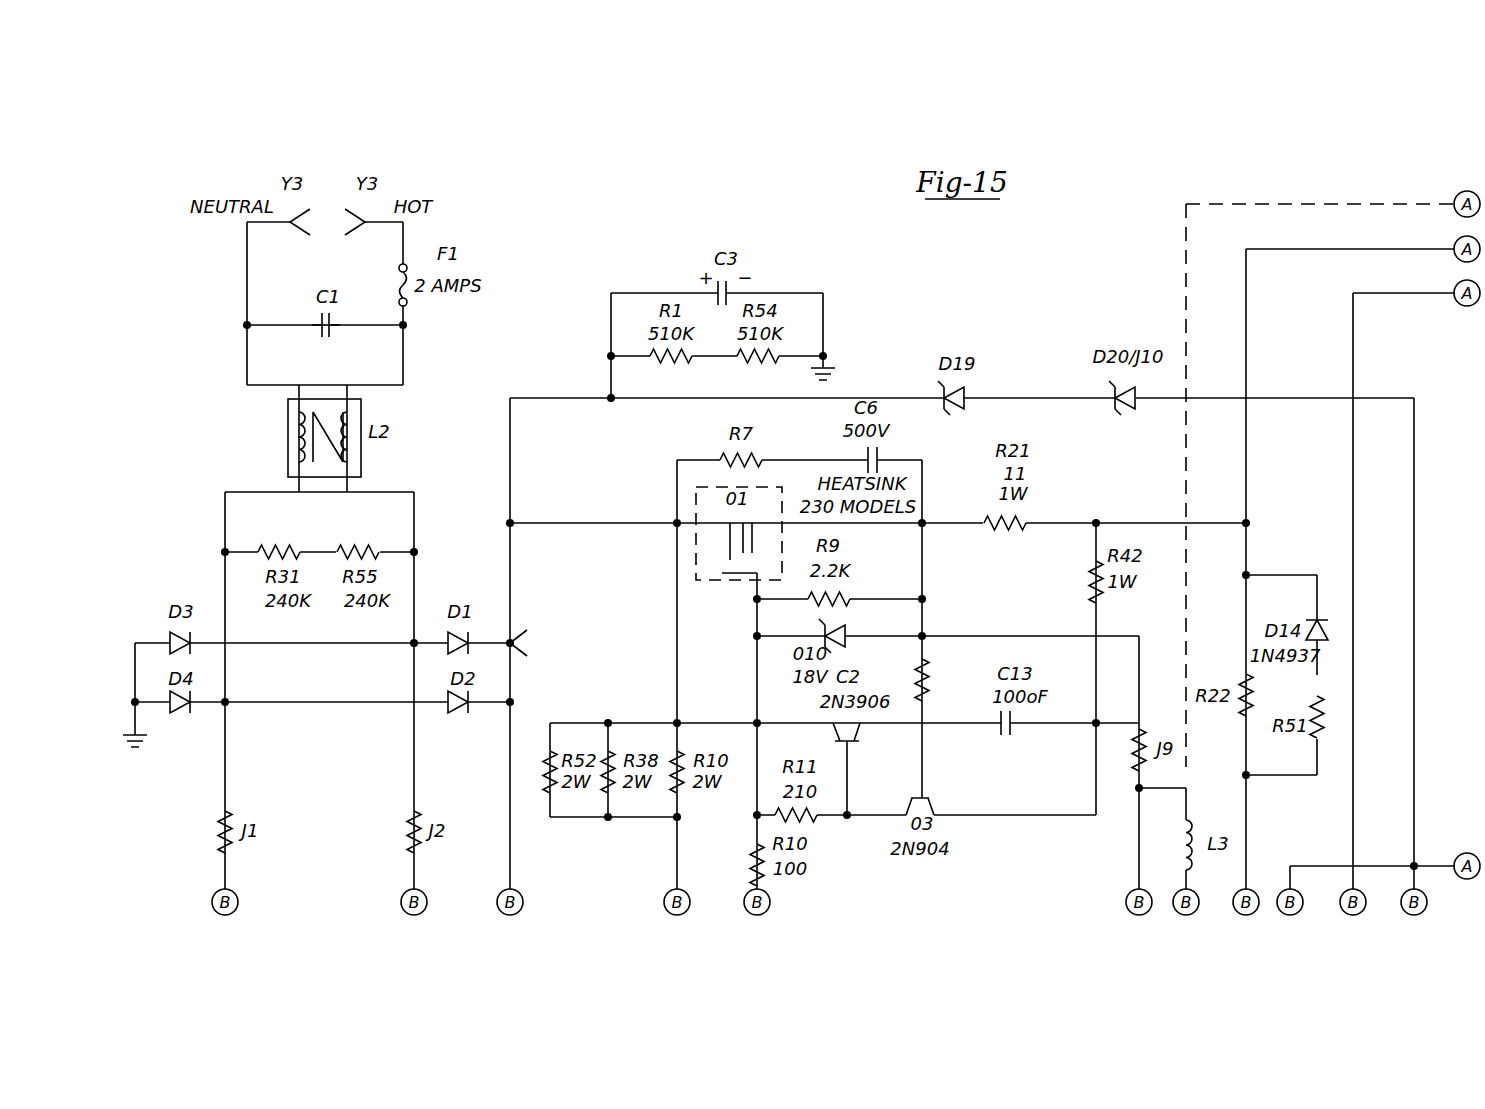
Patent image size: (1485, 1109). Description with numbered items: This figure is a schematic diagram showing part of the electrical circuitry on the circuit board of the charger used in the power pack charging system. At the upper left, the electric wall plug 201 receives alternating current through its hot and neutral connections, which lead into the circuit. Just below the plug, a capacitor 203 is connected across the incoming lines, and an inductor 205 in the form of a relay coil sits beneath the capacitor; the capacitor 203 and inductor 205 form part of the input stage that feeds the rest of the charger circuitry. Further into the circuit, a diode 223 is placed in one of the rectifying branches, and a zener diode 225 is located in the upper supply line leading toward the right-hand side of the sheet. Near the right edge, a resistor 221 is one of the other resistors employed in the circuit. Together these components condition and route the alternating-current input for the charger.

The electric wall plug 201 is at (398, 186).
The capacitor 203 is at (308, 311).
The inductor 205 is at (400, 430).
The diode 223 is at (462, 596).
The zener diode 225 is at (980, 383).
The resistor 221 is at (1331, 730).